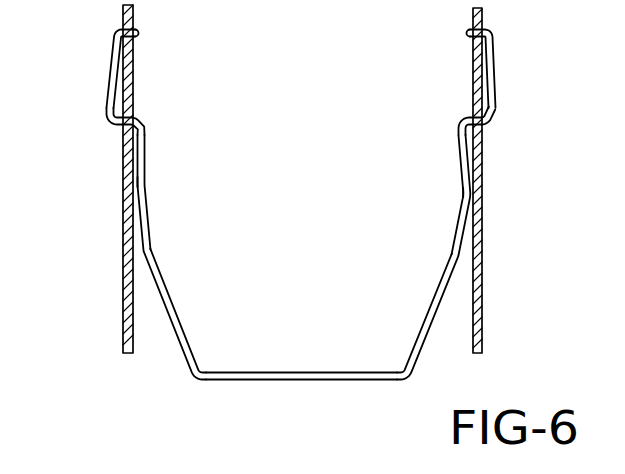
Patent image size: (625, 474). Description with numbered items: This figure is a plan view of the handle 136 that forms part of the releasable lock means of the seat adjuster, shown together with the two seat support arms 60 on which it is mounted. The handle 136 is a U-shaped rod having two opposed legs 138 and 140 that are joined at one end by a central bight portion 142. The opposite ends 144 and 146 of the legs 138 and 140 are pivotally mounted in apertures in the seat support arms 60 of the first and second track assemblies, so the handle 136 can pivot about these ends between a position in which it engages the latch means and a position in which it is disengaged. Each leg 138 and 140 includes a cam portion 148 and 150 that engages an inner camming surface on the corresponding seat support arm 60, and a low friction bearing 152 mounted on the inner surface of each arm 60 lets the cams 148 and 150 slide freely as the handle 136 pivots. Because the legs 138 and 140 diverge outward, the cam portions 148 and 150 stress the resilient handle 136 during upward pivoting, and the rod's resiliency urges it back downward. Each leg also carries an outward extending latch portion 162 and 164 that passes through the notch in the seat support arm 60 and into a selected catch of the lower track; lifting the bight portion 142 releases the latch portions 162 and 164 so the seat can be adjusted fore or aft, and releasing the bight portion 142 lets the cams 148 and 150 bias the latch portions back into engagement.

The seat support arm 60 is at (124, 300).
The handle 136 is at (296, 355).
The leg 138 is at (181, 322).
The leg 140 is at (424, 320).
The central bight portion 142 is at (228, 381).
The end of leg 144 is at (136, 32).
The end of leg 146 is at (470, 33).
The cam portion 148 is at (147, 222).
The cam portion 150 is at (462, 212).
The low friction bearing 152 is at (131, 181).
The latch portion 162 is at (149, 120).
The latch portion 164 is at (458, 118).